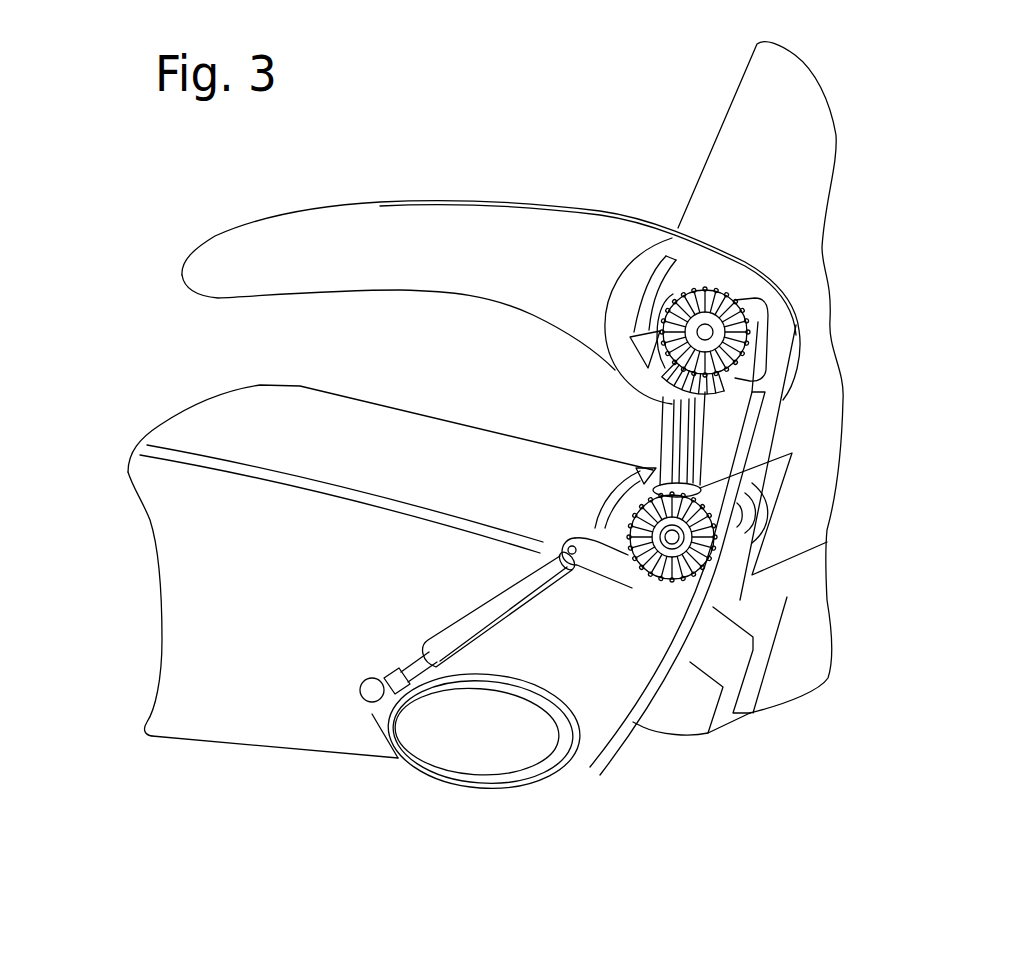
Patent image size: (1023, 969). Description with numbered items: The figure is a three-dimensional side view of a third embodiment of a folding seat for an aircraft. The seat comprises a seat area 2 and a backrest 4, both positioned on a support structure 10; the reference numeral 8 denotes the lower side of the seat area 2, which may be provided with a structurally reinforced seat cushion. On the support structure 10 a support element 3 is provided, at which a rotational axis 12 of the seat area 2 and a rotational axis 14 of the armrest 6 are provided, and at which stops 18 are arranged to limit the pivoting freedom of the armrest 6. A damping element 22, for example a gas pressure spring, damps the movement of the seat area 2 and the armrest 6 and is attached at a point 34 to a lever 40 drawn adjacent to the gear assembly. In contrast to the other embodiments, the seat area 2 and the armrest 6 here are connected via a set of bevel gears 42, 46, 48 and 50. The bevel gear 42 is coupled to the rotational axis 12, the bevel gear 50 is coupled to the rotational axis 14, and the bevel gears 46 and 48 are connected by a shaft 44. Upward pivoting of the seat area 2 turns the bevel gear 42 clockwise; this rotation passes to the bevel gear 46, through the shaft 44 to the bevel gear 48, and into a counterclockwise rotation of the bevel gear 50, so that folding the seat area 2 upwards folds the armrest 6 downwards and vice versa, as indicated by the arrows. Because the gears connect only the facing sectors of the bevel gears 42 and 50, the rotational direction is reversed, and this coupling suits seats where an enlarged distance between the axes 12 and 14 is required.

The seat area 2 is at (367, 410).
The support element 3 is at (612, 750).
The backrest 4 is at (710, 148).
The armrest 6 is at (467, 203).
The lower side of the seat area 8 is at (272, 747).
The support structure 10 is at (490, 790).
The rotational axis 12 is at (678, 537).
The rotational axis 14 is at (753, 345).
The stops 18 is at (963, 236).
The damping element 22 is at (477, 612).
The point 34 is at (568, 547).
The lever 40 is at (623, 577).
The bevel gear 42 is at (687, 577).
The shaft 44 is at (680, 428).
The bevel gear 46 is at (792, 455).
The bevel gear 48 is at (613, 370).
The bevel gear 50 is at (713, 332).